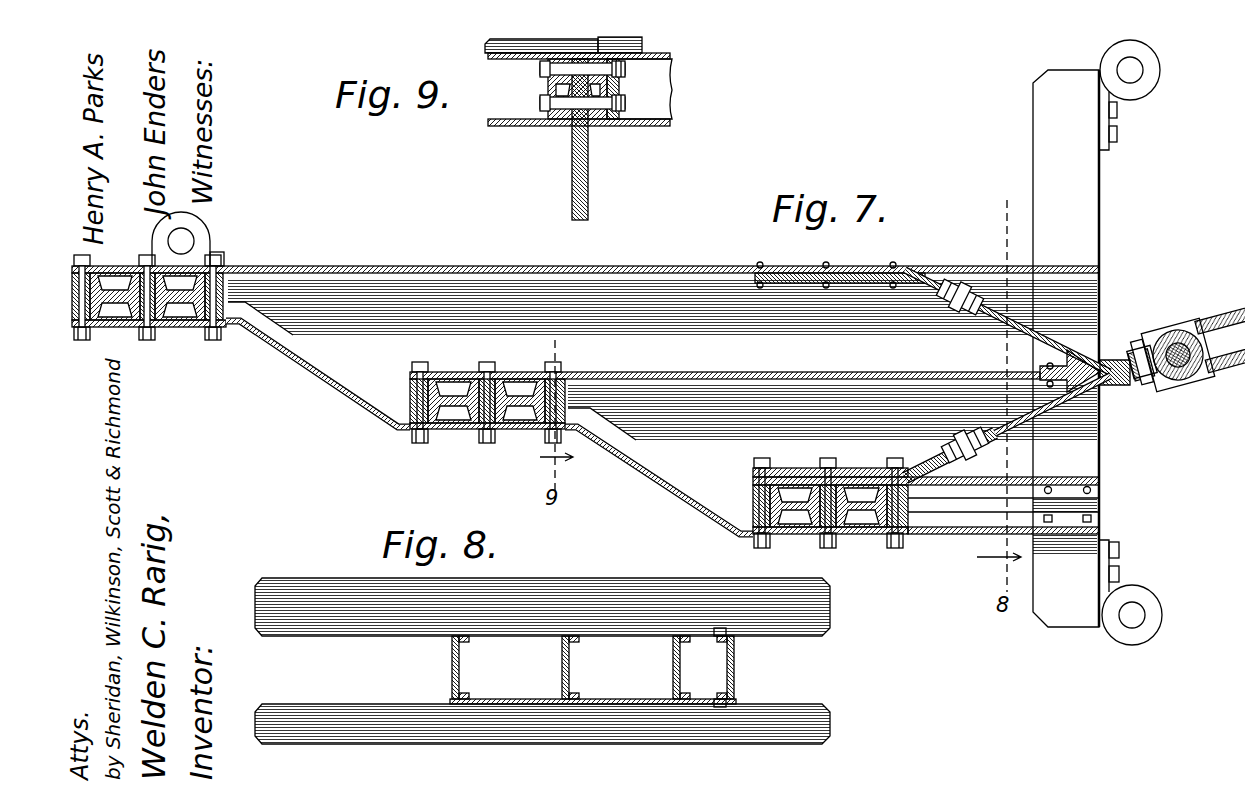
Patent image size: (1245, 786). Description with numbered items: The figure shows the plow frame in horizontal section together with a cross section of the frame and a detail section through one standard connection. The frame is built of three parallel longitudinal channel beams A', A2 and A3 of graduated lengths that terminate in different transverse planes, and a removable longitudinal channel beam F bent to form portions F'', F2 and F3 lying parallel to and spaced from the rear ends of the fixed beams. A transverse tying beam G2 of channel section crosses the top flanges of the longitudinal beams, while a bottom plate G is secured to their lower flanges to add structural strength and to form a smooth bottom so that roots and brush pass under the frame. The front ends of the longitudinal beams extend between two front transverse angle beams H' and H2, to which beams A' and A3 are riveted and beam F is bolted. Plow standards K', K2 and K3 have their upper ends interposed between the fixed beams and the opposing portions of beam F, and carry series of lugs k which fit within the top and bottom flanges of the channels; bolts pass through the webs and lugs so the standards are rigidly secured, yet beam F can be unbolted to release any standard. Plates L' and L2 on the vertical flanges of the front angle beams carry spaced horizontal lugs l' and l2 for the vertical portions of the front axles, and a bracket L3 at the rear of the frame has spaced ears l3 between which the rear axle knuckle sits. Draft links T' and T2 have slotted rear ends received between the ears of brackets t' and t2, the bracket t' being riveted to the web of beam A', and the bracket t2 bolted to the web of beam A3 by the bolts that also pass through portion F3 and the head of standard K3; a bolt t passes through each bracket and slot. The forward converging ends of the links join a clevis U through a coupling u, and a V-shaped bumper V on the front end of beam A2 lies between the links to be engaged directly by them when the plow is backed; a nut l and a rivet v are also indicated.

In FIG. 7, the longitudinal channel beam A' is at (585, 254).
In FIG. 8, the longitudinal channel beam A' is at (437, 667).
In FIG. 7, the longitudinal channel beam A2 is at (728, 372).
In FIG. 9, the longitudinal channel beam A2 is at (548, 88).
In FIG. 8, the longitudinal channel beam A2 is at (562, 665).
In FIG. 7, the longitudinal channel beam A3 is at (926, 505).
In FIG. 8, the longitudinal channel beam A3 is at (673, 665).
In FIG. 7, the removable longitudinal channel beam F is at (489, 427).
In FIG. 8, the removable longitudinal channel beam F is at (739, 667).
In FIG. 7, the longitudinal portion of removable beam F'' is at (149, 342).
In FIG. 7, the longitudinal portion of removable beam F2 is at (460, 430).
In FIG. 9, the longitudinal portion of removable beam F2 is at (612, 90).
In FIG. 7, the longitudinal portion of removable beam F3 is at (866, 534).
In FIG. 9, the bottom plate G is at (505, 126).
In FIG. 8, the bottom plate G is at (610, 704).
In FIG. 9, the tying beam G2 is at (487, 50).
In FIG. 8, the front transverse angle beam H' is at (542, 586).
In FIG. 7, the front transverse angle beam H2 is at (1090, 243).
In FIG. 8, the front transverse angle beam H2 is at (580, 740).
In FIG. 7, the plow standard K' is at (147, 279).
In FIG. 7, the plow standard K2 is at (454, 392).
In FIG. 9, the plow standard K2 is at (575, 97).
In FIG. 7, the plow standard K3 is at (806, 485).
In FIG. 7, the lug k is at (185, 272).
In FIG. 9, the lug k is at (596, 122).
In FIG. 7, the horizontal lug l' is at (1139, 95).
In FIG. 7, the horizontal lug l2 is at (1160, 620).
In FIG. 7, the ear l3 is at (192, 230).
In FIG. 7, the plate L' is at (1131, 122).
In FIG. 7, the plate L2 is at (1120, 566).
In FIG. 7, the bracket L3 is at (224, 259).
In FIG. 7, the draft link T' is at (1007, 321).
In FIG. 7, the draft link T2 is at (1035, 412).
In FIG. 7, the bracket t' is at (840, 296).
In FIG. 7, the bolt t is at (952, 311).
In FIG. 7, the bracket t2 is at (936, 458).
In FIG. 7, the nut l is at (958, 438).
In FIG. 7, the V-shaped bumper V is at (1100, 357).
In FIG. 7, the rivet v is at (1044, 358).
In FIG. 7, the clevis U is at (1182, 374).
In FIG. 7, the coupling u is at (1142, 380).